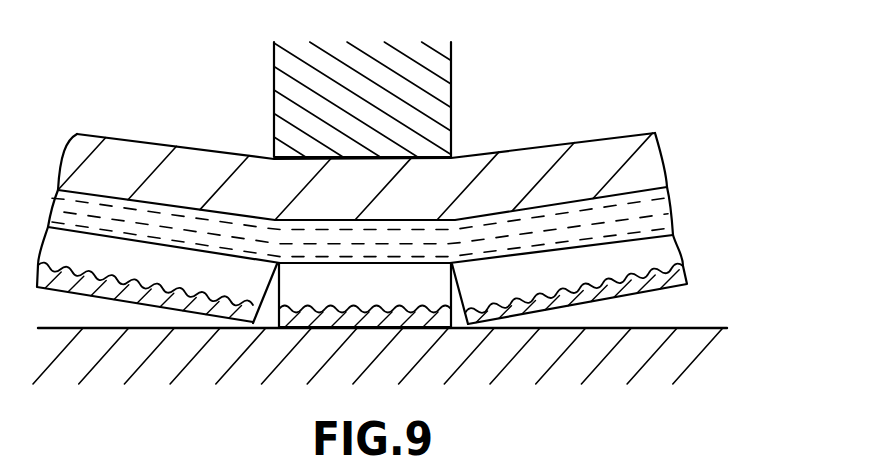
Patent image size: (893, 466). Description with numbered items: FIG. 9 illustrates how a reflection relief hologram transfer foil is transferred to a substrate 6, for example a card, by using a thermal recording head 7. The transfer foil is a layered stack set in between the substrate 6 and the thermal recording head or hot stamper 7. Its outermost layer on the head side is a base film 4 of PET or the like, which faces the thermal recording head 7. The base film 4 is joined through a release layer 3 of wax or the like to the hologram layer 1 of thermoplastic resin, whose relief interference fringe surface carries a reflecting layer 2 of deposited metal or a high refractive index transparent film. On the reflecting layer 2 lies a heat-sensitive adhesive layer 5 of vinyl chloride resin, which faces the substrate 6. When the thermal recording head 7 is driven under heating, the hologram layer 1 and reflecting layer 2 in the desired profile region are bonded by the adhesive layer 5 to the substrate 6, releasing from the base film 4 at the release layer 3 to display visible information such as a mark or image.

The hologram layer 1 is at (667, 242).
The reflecting layer 2 is at (682, 258).
The release layer 3 is at (665, 205).
The base film 4 is at (653, 157).
The heat-sensitive adhesive layer 5 is at (688, 282).
The substrate 6 is at (673, 352).
The thermal recording head or hot stamper 7 is at (452, 68).